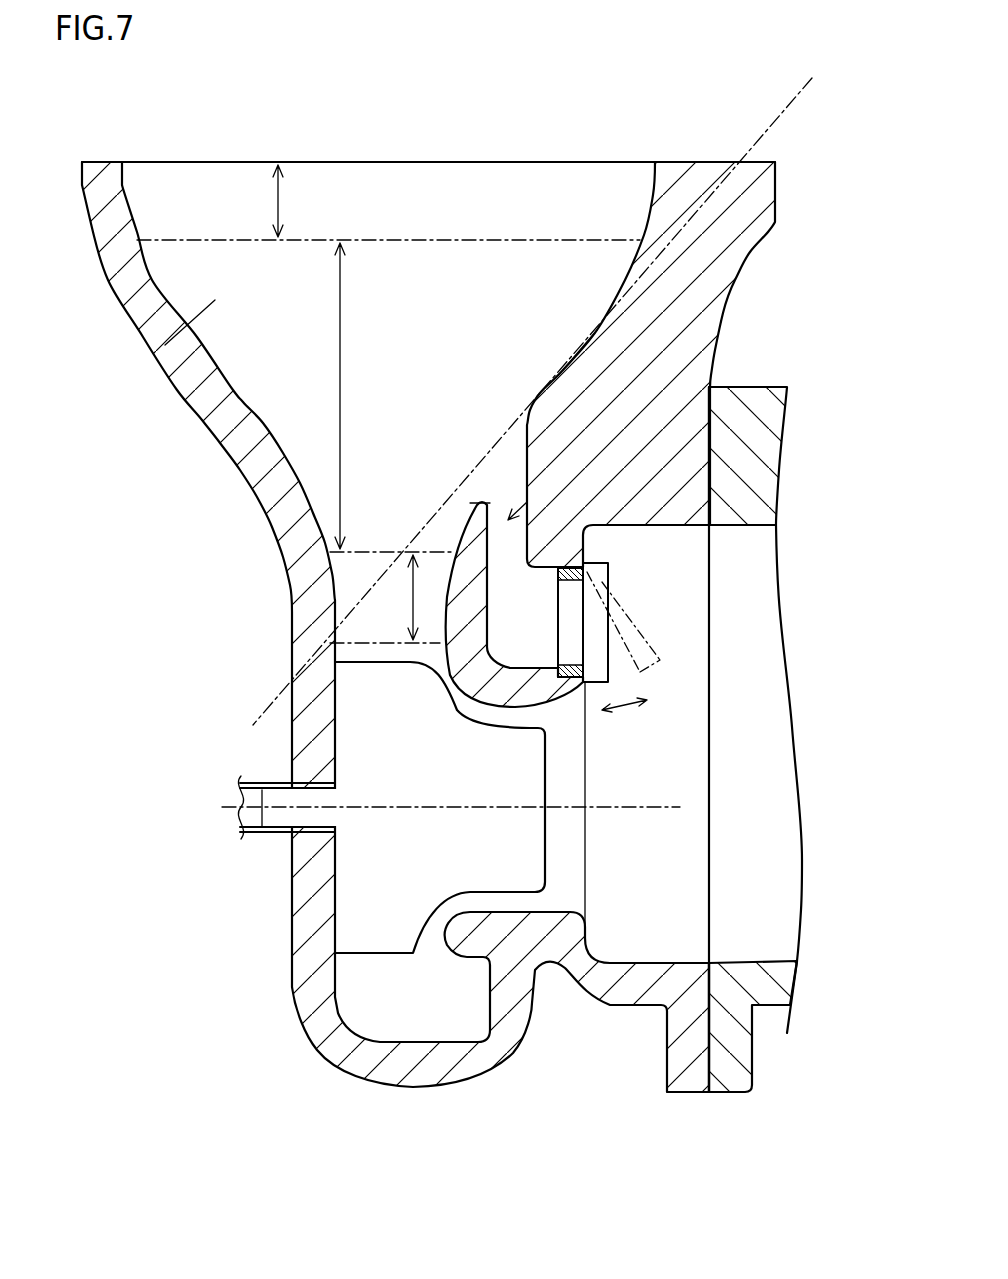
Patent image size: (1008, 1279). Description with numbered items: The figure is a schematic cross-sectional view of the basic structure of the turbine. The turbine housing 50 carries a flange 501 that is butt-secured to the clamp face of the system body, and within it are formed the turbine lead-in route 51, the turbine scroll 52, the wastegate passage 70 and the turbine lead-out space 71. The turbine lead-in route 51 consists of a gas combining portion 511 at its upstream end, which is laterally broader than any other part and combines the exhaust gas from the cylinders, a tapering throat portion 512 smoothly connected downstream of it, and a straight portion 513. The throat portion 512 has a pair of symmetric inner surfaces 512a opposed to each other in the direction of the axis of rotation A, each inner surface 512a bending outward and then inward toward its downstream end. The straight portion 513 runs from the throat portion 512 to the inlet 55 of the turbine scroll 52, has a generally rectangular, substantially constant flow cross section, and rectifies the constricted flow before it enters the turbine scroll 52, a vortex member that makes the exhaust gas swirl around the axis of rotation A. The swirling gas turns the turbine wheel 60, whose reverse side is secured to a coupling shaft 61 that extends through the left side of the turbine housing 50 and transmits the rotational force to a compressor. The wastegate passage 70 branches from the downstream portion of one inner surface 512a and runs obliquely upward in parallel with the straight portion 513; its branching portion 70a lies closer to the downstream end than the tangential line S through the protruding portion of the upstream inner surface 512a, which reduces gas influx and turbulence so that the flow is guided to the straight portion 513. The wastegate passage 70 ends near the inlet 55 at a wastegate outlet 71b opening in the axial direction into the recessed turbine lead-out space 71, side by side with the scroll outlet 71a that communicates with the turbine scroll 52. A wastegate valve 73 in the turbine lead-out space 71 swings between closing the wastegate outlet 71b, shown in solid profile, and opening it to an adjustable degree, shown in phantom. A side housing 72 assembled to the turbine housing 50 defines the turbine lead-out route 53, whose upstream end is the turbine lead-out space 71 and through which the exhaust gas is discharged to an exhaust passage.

The turbine housing 50 is at (200, 400).
The flange 501 is at (100, 162).
The turbine lead-in route 51 is at (408, 207).
The gas combining portion 511 is at (306, 201).
The throat portion 512 is at (315, 396).
The inner surface 512a is at (188, 340).
The straight portion 513 is at (412, 588).
The inlet of the turbine scroll 55 is at (333, 650).
The tangential line S is at (787, 108).
The wastegate passage 70 is at (533, 478).
The branching portion 70a is at (480, 492).
The turbine lead-out space 71 is at (650, 958).
The scroll outlet 71a is at (598, 876).
The wastegate outlet 71b is at (545, 625).
The side housing 72 is at (745, 1062).
The wastegate valve 73 is at (600, 585).
The turbine lead-out route 53 is at (776, 735).
The turbine wheel 60 is at (353, 907).
The coupling shaft 61 is at (250, 792).
The axis of rotation A is at (273, 833).
The turbine scroll 52 is at (395, 1022).